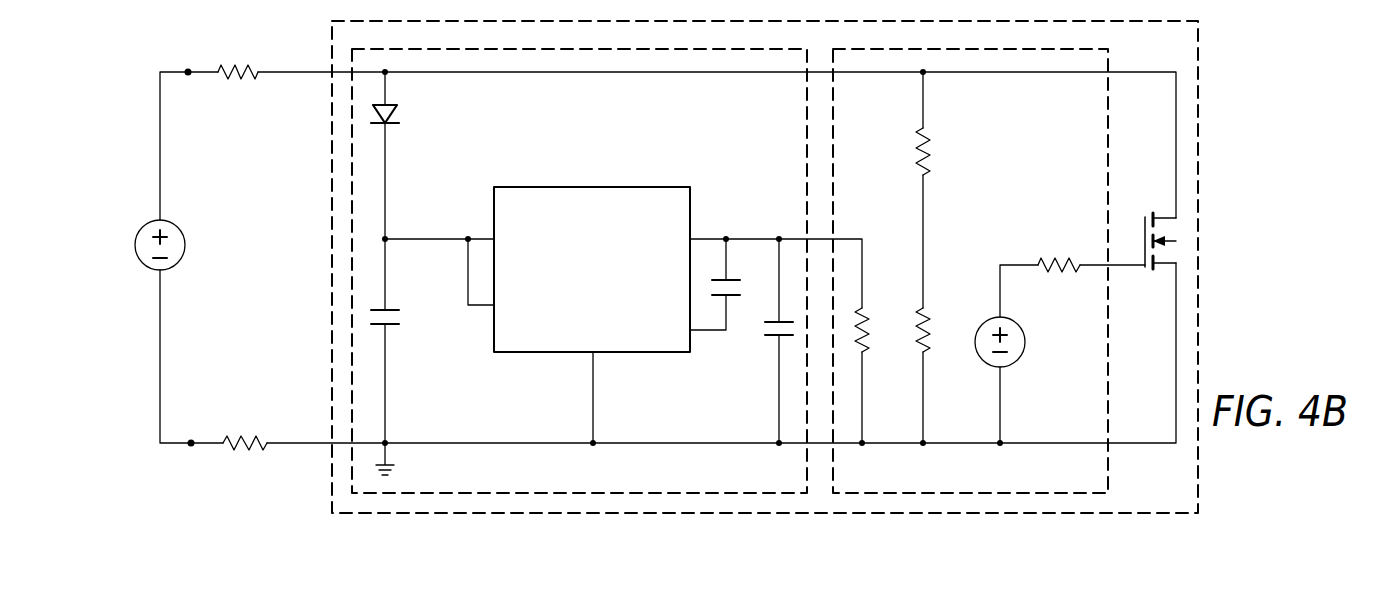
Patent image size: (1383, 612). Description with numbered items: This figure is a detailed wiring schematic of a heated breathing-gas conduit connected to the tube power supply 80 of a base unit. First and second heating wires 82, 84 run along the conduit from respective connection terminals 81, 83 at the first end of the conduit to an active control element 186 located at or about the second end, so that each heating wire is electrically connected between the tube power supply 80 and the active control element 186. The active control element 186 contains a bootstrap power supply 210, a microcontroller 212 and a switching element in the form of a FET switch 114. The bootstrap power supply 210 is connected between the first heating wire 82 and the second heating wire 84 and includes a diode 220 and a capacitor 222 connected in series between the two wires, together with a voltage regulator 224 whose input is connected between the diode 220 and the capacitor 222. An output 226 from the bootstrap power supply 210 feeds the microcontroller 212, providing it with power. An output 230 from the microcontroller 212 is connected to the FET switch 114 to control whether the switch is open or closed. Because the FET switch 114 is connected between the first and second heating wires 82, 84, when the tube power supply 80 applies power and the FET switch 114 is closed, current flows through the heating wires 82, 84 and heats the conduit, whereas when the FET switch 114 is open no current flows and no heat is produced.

The tube power supply 80 is at (185, 248).
The connection terminal 81 is at (188, 70).
The first heating wire 82 is at (243, 96).
The connection terminal 83 is at (193, 447).
The second heating wire 84 is at (245, 428).
The FET switch 114 is at (1134, 219).
The active control element 186 is at (1203, 135).
The bootstrap power supply 210 is at (377, 49).
The microcontroller 212 is at (1108, 62).
The diode 220 is at (402, 116).
The capacitor 222 is at (412, 326).
The voltage regulator 224 is at (580, 187).
The output 226 is at (798, 239).
The output 230 is at (1125, 267).